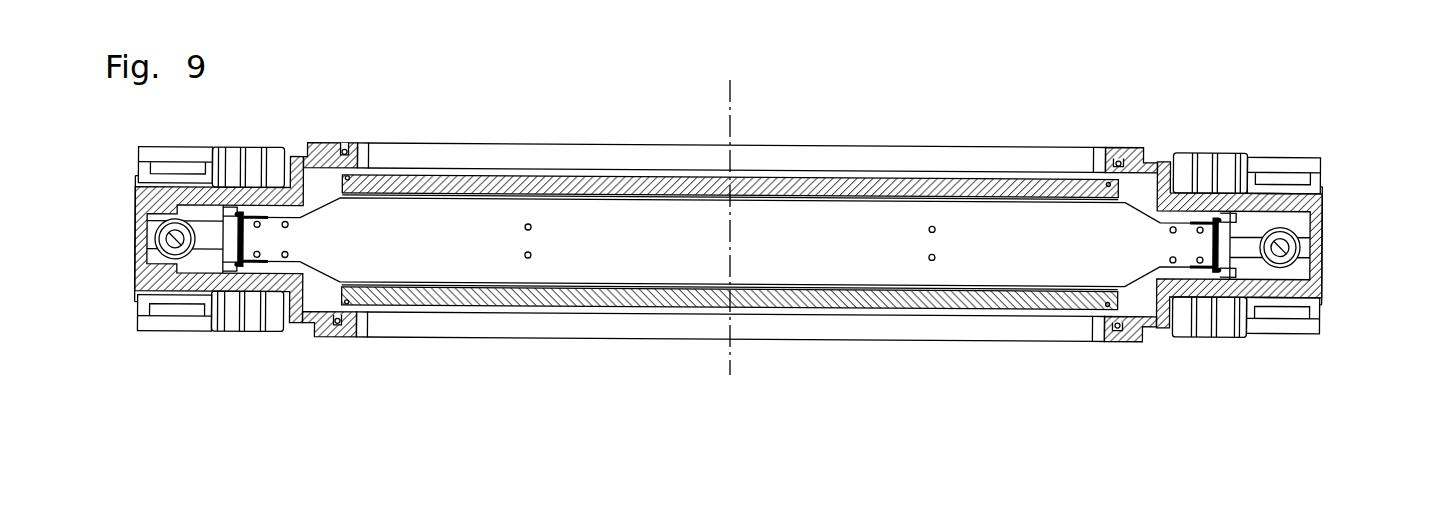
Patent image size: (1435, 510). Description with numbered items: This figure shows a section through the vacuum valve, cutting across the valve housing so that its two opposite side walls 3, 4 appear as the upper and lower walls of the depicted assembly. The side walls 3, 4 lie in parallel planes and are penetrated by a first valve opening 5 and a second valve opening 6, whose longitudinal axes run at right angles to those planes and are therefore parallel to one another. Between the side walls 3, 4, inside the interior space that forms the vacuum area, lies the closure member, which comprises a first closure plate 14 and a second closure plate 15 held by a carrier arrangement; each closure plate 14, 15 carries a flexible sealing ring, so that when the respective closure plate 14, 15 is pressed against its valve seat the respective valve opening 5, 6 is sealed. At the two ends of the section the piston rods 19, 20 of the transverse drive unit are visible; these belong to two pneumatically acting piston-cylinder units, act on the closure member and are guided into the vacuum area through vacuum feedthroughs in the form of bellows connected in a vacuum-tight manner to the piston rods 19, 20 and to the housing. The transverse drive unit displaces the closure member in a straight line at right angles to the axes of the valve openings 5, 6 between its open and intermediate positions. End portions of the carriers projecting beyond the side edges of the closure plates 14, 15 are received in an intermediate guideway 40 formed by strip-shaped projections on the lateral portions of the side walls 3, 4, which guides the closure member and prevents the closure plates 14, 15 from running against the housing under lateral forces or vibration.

The side wall 3 is at (325, 330).
The side wall 4 is at (330, 146).
The first valve opening 5 is at (498, 329).
The second valve opening 6 is at (482, 156).
The first closure plate 14 is at (888, 297).
The second closure plate 15 is at (865, 177).
The piston rod 19 is at (173, 240).
The piston rod 20 is at (1297, 231).
The intermediate guideway 40 is at (1197, 215).